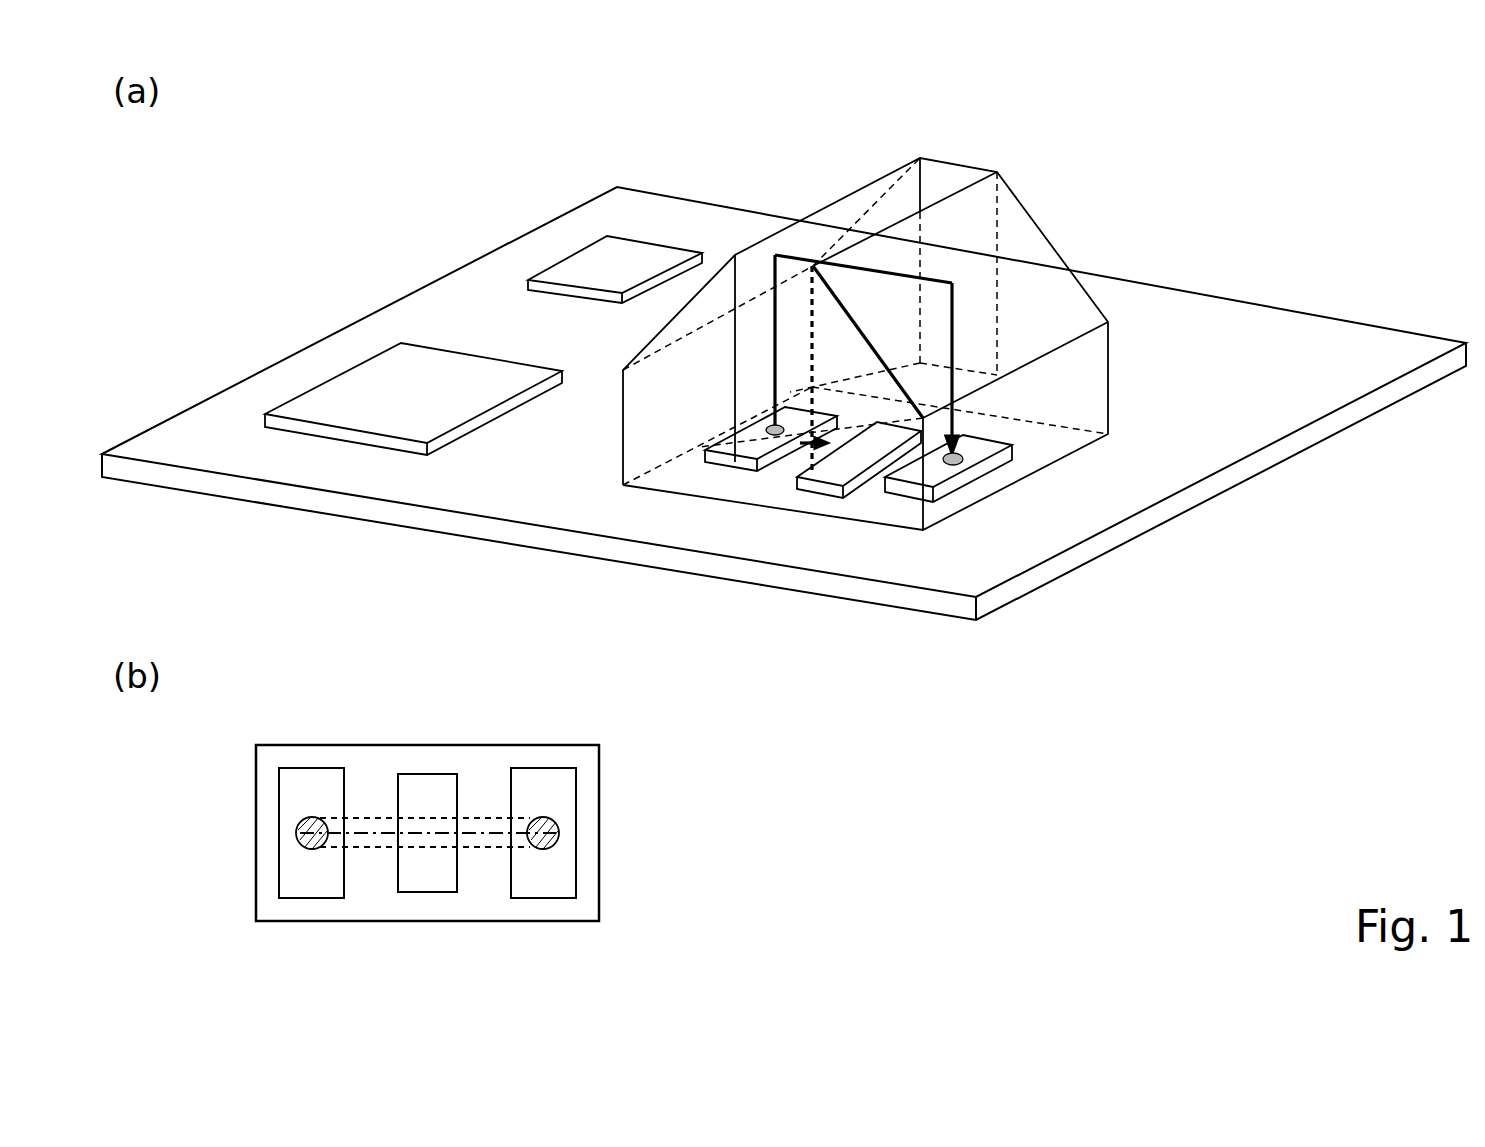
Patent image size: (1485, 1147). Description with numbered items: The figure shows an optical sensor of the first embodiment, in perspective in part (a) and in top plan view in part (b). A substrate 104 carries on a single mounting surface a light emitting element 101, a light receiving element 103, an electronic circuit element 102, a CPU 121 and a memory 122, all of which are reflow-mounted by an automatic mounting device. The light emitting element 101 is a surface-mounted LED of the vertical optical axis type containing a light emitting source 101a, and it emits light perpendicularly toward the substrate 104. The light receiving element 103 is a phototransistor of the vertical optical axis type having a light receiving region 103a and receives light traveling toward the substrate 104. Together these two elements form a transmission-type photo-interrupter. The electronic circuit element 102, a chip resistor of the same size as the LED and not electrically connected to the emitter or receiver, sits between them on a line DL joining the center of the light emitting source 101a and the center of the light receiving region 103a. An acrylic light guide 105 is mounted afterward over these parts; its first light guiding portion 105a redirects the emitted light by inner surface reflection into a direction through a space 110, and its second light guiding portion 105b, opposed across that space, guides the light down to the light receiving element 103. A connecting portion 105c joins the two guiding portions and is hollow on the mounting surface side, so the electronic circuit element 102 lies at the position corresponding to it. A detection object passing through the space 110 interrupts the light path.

The light emitting element 101 is at (722, 462).
The light emitting source 101a is at (310, 847).
The electronic circuit element 102 is at (823, 480).
The light receiving element 103 is at (960, 482).
The light receiving region 103a is at (543, 848).
The substrate 104 is at (1220, 433).
The light guide 105 is at (909, 379).
The first light guiding portion 105a is at (900, 170).
The second light guiding portion 105b is at (1005, 177).
The connecting portion 105c is at (765, 493).
The space 110 is at (947, 173).
The CPU 121 is at (358, 392).
The memory 122 is at (580, 262).
The line DL is at (450, 835).